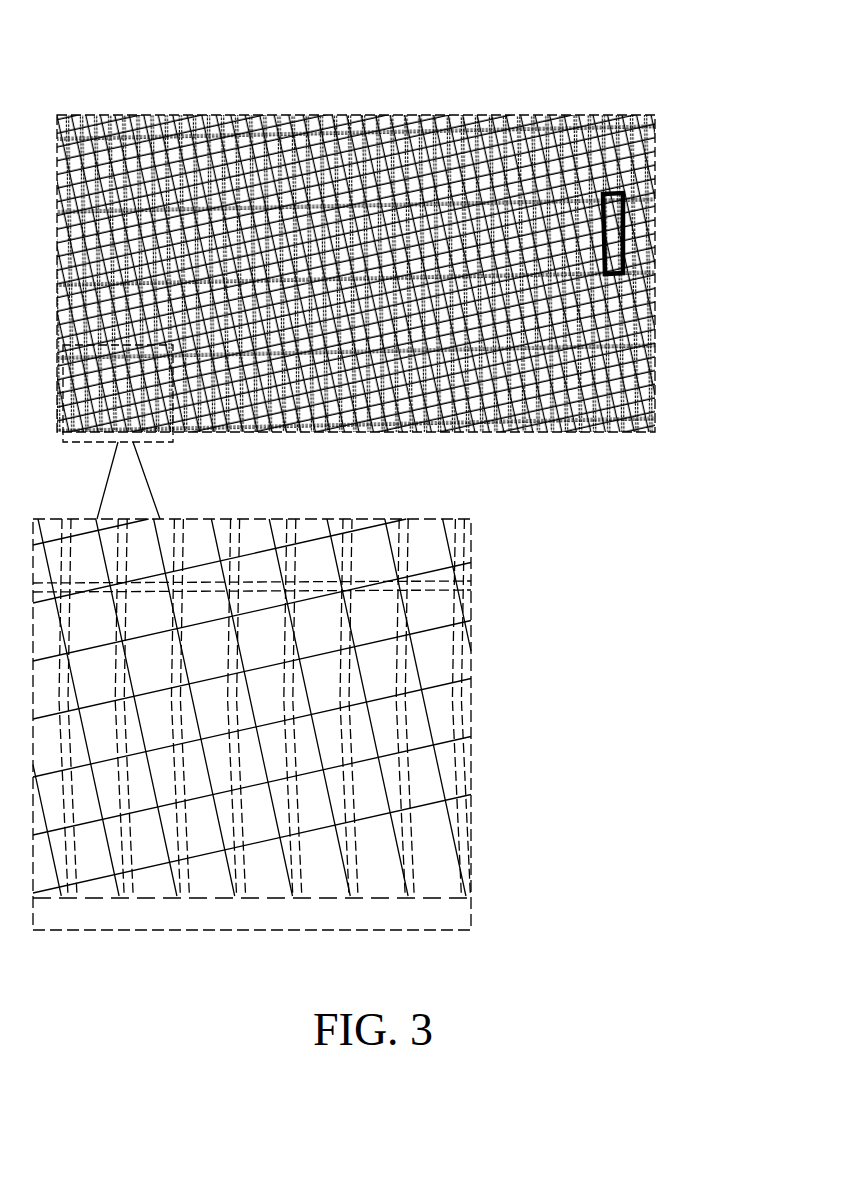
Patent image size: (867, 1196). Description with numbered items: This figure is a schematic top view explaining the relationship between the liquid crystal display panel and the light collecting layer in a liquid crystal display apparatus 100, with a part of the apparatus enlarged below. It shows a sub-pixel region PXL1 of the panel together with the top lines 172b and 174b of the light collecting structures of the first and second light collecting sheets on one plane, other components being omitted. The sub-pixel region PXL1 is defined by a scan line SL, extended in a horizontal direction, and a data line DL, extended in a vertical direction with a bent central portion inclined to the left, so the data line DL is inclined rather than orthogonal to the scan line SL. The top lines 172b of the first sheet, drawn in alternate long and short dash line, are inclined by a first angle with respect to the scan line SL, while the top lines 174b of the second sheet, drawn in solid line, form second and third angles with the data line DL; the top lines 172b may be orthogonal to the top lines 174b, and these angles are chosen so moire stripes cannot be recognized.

The liquid crystal display apparatus 100 is at (708, 42).
The sub-pixel region PXL1 is at (627, 228).
The top lines of the second light collecting sheet 174b is at (400, 520).
The data line DL is at (410, 547).
The top lines of the first light collecting sheet 172b is at (430, 583).
The scan line SL is at (443, 588).